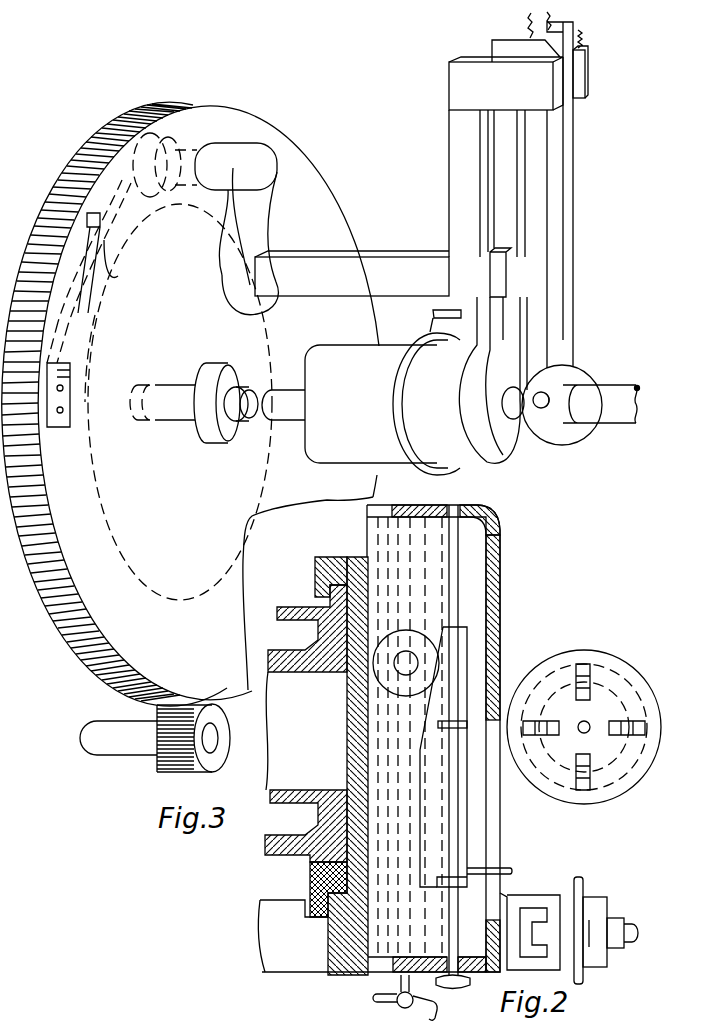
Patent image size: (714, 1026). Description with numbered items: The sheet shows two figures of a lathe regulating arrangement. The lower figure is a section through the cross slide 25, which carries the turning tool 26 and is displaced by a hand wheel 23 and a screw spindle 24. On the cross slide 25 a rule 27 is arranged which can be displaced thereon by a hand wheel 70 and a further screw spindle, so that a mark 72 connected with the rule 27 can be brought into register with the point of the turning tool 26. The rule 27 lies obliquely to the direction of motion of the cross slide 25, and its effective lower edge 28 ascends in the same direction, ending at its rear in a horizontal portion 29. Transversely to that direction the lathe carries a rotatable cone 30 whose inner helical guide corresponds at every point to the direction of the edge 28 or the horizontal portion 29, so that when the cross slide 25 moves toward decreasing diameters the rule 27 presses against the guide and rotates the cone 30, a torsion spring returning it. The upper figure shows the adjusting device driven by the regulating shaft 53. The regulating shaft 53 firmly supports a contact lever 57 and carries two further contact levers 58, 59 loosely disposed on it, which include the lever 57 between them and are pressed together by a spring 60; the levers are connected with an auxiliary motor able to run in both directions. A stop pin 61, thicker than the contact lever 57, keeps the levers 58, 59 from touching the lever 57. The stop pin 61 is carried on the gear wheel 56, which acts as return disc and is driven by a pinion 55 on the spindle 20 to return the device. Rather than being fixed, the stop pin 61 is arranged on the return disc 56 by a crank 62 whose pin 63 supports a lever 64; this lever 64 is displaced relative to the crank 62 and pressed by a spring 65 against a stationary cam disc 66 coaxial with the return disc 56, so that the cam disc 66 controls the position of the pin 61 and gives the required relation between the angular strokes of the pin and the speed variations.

In FIG. 3, the spindle 20 is at (128, 748).
In FIG. 3, the pinion 55 is at (173, 760).
In FIG. 3, the gear wheel 56 is at (118, 642).
In FIG. 3, the cam disc 66 is at (125, 565).
In FIG. 3, the lever 64 is at (127, 200).
In FIG. 3, the spring 65 is at (78, 280).
In FIG. 3, the pin 63 is at (223, 152).
In FIG. 3, the crank 62 is at (263, 205).
In FIG. 3, the stop pin 61 is at (393, 263).
In FIG. 3, the contact lever 58 is at (458, 97).
In FIG. 3, the contact lever 59 is at (505, 165).
In FIG. 3, the contact lever 57 is at (558, 163).
In FIG. 3, the regulating shaft 53 is at (610, 392).
In FIG. 3, the spring 60 is at (440, 468).
In FIG. 2, the screw spindle 24 is at (372, 935).
In FIG. 2, the horizontal portion 29 is at (415, 851).
In FIG. 2, the cone 30 is at (387, 678).
In FIG. 2, the rule 27 is at (463, 660).
In FIG. 2, the lower edge 28 is at (432, 698).
In FIG. 2, the cross slide 25 is at (500, 662).
In FIG. 2, the hand wheel 70 is at (455, 985).
In FIG. 2, the mark 72 is at (505, 868).
In FIG. 2, the turning tool 26 is at (580, 875).
In FIG. 2, the hand wheel 23 is at (430, 1008).